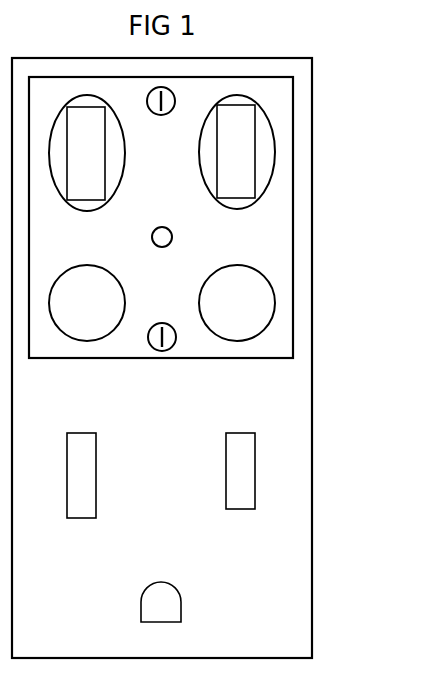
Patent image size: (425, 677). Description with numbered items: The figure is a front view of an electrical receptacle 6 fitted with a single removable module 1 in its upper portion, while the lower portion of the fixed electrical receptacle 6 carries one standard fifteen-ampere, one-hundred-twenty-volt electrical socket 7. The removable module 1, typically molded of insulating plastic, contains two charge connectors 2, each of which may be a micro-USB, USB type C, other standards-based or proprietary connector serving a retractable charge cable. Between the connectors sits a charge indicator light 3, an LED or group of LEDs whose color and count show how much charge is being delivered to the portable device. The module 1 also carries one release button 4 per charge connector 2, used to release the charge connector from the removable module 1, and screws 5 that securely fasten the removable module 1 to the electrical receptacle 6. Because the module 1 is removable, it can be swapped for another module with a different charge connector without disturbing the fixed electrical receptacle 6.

The removable module 1 is at (301, 87).
The charge connector 2 is at (259, 143).
The charge indicator light 3 is at (178, 238).
The release button 4 is at (246, 293).
The screws 5 is at (178, 340).
The electrical receptacle 6 is at (320, 433).
The electrical socket 7 is at (236, 537).